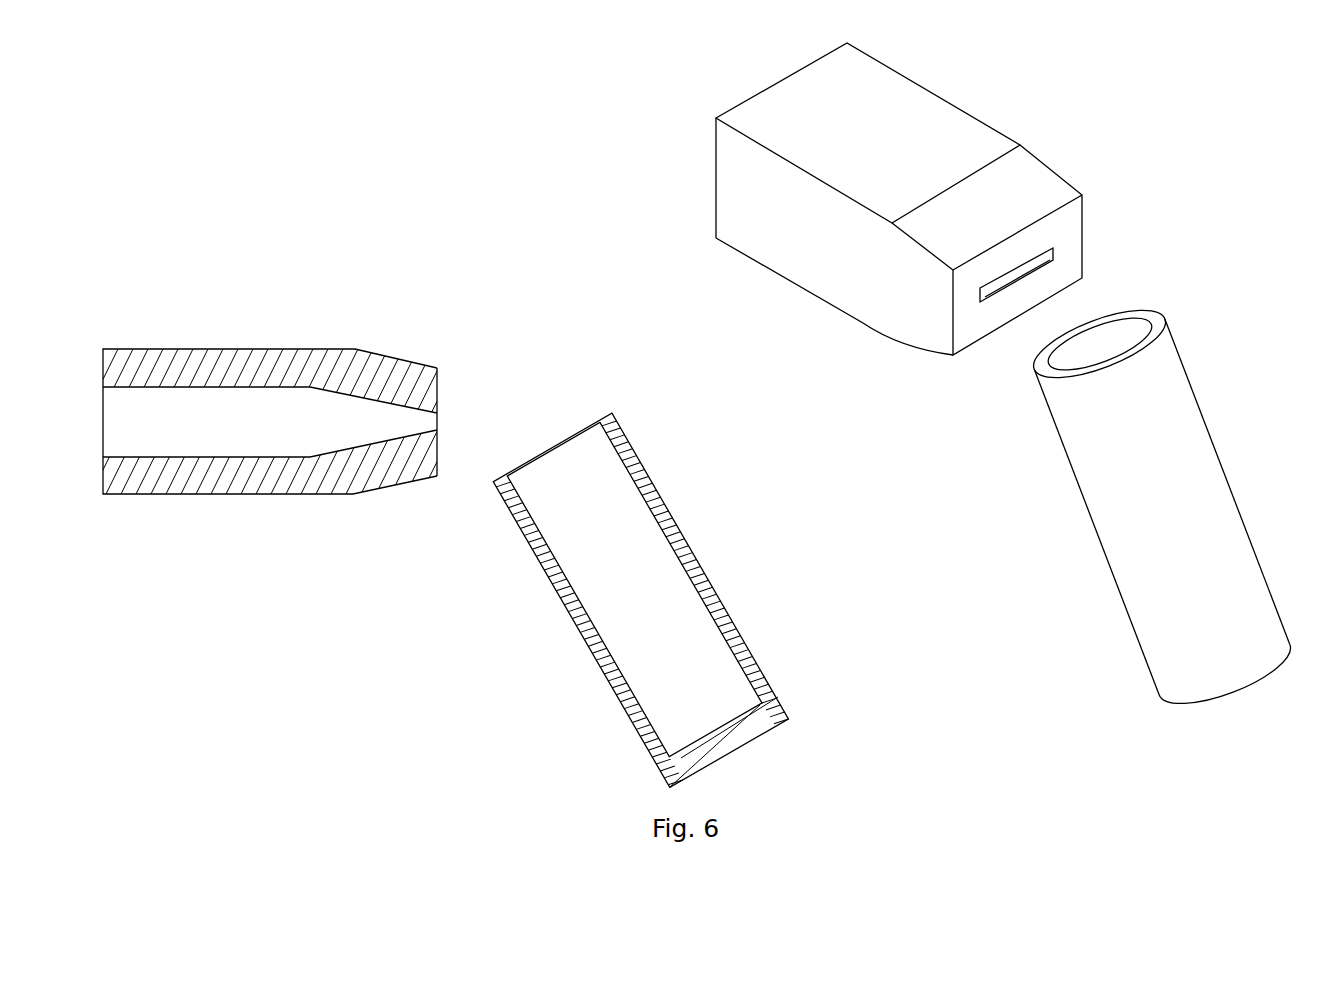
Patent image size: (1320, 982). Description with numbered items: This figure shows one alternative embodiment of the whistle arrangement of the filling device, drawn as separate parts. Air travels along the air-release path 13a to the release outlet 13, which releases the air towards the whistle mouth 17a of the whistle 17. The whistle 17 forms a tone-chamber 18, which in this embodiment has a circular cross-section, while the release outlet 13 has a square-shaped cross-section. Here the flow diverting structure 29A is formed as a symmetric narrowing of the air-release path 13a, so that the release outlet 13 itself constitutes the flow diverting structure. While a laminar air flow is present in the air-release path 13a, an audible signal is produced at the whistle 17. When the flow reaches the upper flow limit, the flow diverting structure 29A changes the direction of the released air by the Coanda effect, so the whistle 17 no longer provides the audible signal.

The release outlet 13 is at (1013, 280).
The air-release path 13a is at (235, 413).
The whistle 17 is at (1141, 550).
The whistle mouth 17a is at (1117, 333).
The tone-chamber 18 is at (695, 646).
The flow diverting structure 29A is at (400, 420).